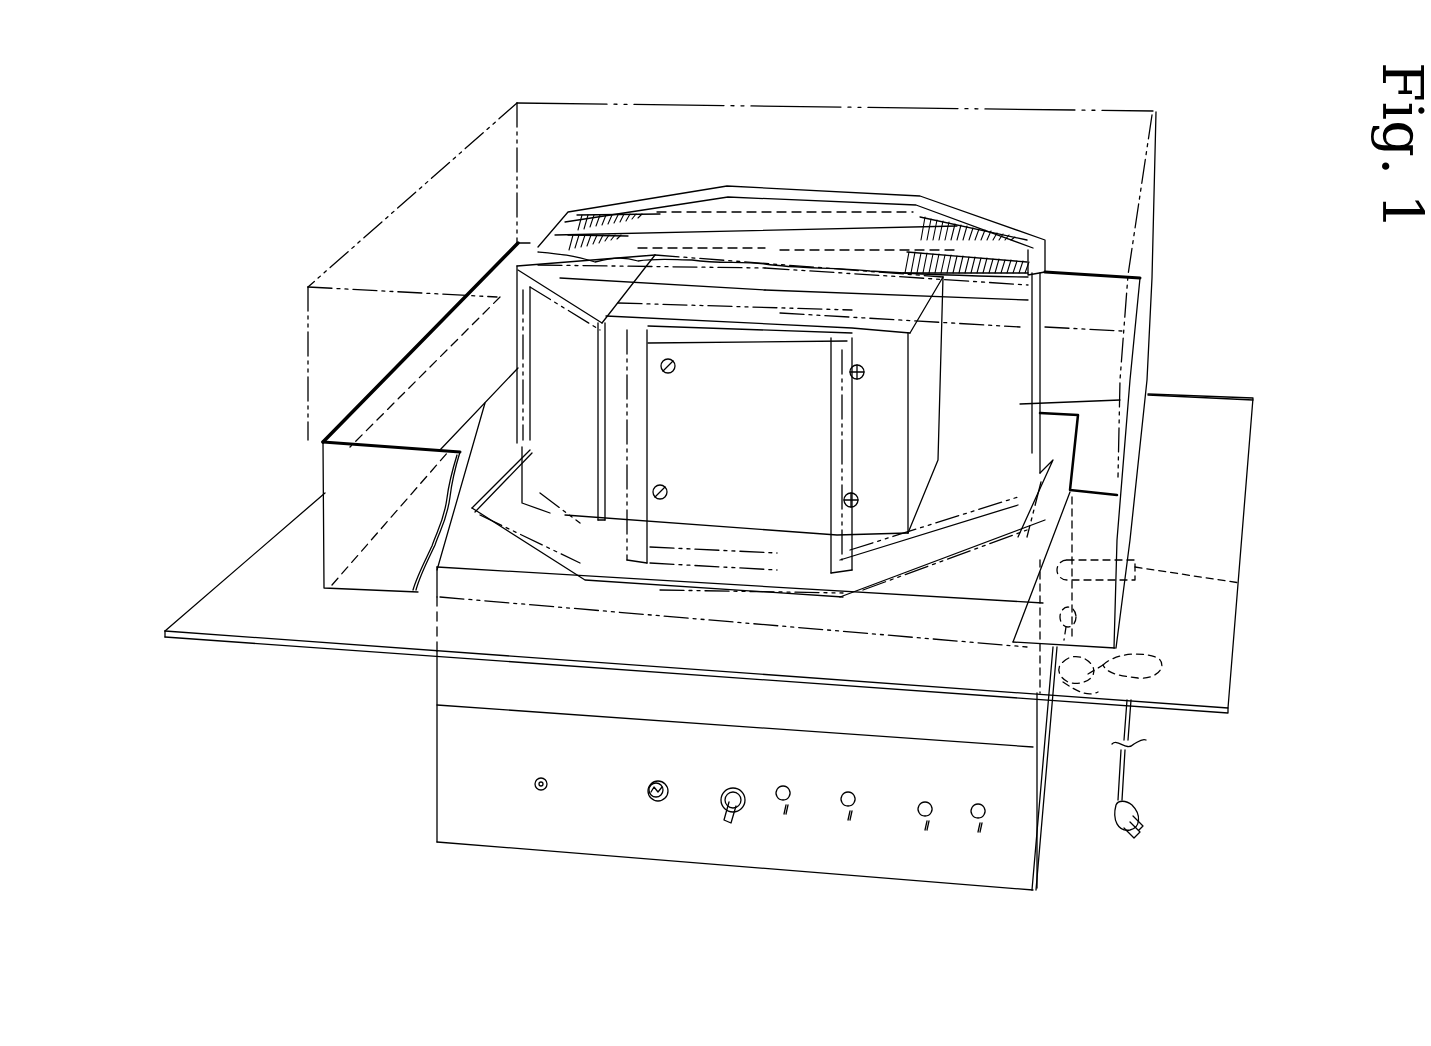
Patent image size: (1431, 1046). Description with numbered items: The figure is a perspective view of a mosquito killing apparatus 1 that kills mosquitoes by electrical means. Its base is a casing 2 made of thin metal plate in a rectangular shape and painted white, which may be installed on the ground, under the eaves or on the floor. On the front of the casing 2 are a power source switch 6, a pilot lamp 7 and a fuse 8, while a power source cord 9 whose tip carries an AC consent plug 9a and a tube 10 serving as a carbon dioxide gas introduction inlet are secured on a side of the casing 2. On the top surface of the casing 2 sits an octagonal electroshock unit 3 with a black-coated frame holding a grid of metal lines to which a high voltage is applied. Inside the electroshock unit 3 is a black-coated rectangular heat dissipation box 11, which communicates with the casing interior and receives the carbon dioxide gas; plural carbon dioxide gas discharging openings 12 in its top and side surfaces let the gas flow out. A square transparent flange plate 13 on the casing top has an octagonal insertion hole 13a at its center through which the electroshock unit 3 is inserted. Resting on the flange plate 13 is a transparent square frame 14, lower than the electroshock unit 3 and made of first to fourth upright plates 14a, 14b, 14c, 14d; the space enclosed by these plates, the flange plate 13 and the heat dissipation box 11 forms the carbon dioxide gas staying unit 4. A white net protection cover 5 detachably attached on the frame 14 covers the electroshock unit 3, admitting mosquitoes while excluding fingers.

The mosquito killing apparatus 1 is at (345, 176).
The casing 2 is at (437, 740).
The electroshock unit 3 is at (940, 215).
The carbon dioxide gas staying unit 4 is at (374, 438).
The protection cover 5 is at (1153, 210).
The power source switch 6 is at (730, 823).
The pilot lamp 7 is at (540, 792).
The fuse 8 is at (658, 802).
The power source cord 9 is at (1125, 772).
The AC consent plug 9a is at (1113, 843).
The tube 10 is at (1159, 595).
The heat dissipation box 11 is at (883, 433).
The carbon dioxide gas discharging openings 12 is at (675, 370).
The flange plate 13 is at (258, 610).
The insertion hole 13a is at (538, 540).
The frame 14 is at (383, 348).
The first upright plate 14a is at (342, 493).
The second upright plate 14b is at (440, 330).
The third upright plate 14c is at (1100, 305).
The fourth upright plate 14d is at (1133, 463).